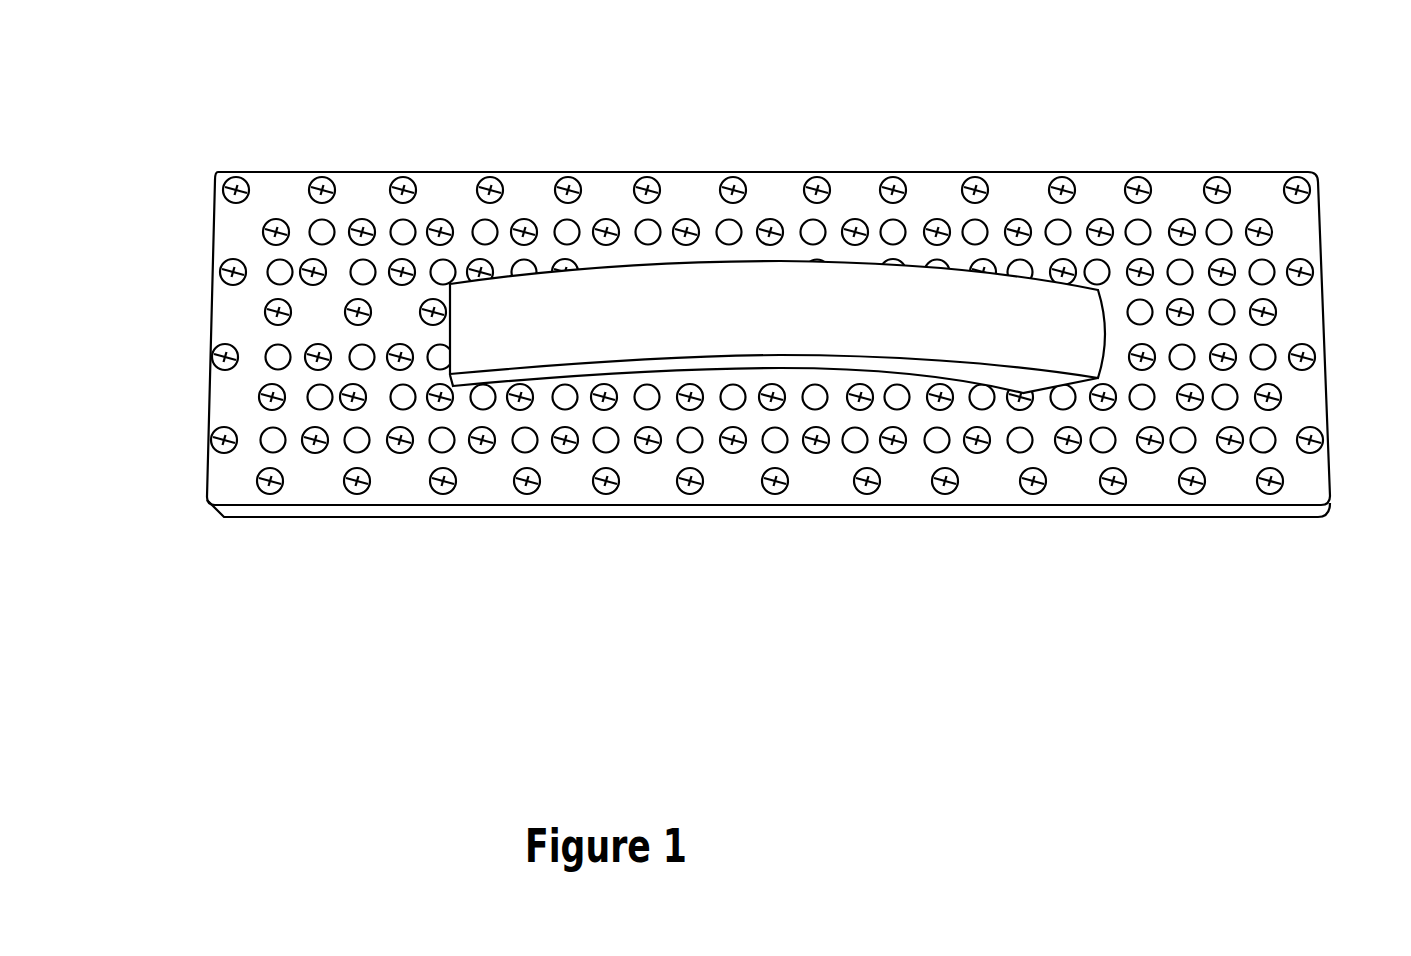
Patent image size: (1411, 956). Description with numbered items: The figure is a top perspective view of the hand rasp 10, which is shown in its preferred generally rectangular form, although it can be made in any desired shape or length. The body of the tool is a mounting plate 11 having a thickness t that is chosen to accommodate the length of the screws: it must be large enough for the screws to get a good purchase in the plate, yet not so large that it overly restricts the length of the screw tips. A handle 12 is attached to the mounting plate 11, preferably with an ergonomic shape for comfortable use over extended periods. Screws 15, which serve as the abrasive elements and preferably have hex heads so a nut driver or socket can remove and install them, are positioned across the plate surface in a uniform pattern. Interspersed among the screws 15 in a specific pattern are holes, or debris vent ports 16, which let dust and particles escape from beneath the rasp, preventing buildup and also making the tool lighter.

The hand rasp 10 is at (566, 146).
The mounting plate 11 is at (225, 475).
The handle 12 is at (713, 293).
The screws 15 is at (472, 174).
The debris vent ports 16 is at (987, 232).
The thickness t is at (1378, 483).